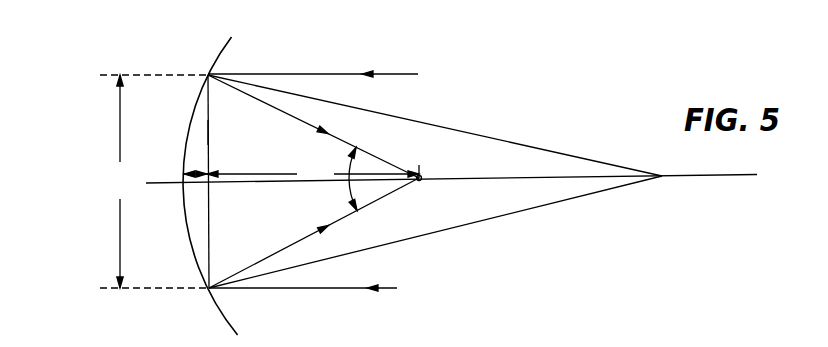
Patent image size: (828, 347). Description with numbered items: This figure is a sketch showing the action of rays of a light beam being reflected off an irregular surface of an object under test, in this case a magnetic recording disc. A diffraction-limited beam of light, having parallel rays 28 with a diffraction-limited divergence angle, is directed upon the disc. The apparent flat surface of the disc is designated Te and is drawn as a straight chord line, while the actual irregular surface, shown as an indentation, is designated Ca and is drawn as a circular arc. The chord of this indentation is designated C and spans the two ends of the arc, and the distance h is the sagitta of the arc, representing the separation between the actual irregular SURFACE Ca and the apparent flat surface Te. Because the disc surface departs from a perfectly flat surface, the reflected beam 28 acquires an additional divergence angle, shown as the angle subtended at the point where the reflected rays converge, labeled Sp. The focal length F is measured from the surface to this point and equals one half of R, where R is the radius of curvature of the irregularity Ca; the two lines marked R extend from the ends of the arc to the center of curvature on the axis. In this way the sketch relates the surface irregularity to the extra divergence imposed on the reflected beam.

The parallel rays of diffraction-limited beam 28 is at (383, 71).
The radius of curvature R is at (486, 133).
The focal length F is at (307, 172).
The chord C is at (116, 181).
The sagitta h is at (190, 178).
The actual irregular surface Ca is at (188, 127).
The apparent surface Te is at (208, 133).
The focal point Sp is at (412, 190).
The lens surface SURFACE is at (206, 305).